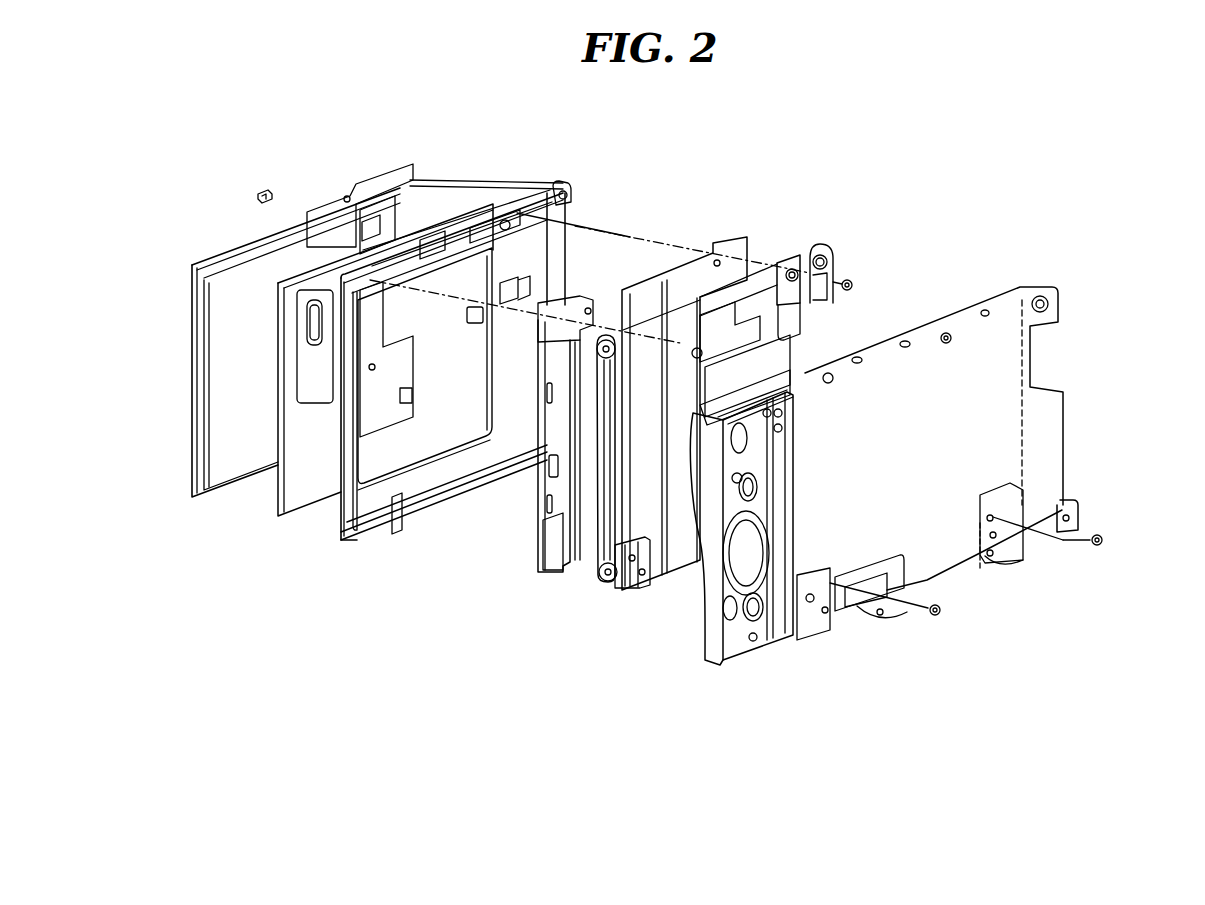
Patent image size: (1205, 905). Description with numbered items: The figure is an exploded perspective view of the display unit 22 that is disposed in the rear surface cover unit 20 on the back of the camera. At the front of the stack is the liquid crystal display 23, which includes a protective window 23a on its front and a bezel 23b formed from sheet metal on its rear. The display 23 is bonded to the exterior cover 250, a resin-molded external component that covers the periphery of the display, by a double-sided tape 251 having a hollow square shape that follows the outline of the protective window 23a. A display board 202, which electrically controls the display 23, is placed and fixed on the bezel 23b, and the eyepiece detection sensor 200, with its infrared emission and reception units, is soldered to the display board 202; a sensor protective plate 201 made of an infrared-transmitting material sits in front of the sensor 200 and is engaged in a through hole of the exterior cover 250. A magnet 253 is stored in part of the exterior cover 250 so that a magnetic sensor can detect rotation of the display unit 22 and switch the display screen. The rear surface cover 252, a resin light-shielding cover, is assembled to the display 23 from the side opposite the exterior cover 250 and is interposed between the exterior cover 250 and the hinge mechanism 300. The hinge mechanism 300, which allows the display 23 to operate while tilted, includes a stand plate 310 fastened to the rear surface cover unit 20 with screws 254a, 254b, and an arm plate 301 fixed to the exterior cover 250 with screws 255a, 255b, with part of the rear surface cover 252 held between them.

The rear surface cover unit 20 is at (1002, 353).
The display unit 22 is at (830, 185).
The liquid crystal display 23 is at (255, 333).
The protective window 23a is at (247, 243).
The bezel 23b is at (226, 315).
The eyepiece detection sensor 200 is at (262, 191).
The sensor protective plate 201 is at (530, 237).
The display board 202 is at (352, 240).
The exterior cover 250 is at (562, 188).
The double-sided tape 251 is at (277, 367).
The rear surface cover 252 is at (537, 545).
The magnet 253 is at (490, 250).
The screw 254a is at (942, 614).
The screw 254b is at (1103, 545).
The screw 255a is at (697, 353).
The screw 255b is at (851, 282).
The hinge mechanism 300 is at (598, 562).
The arm plate 301 is at (792, 262).
The stand plate 310 is at (663, 572).